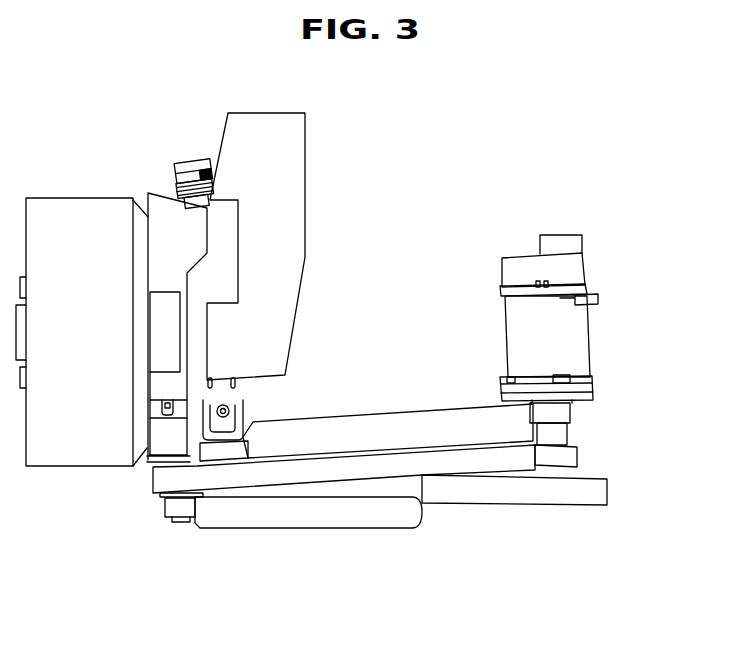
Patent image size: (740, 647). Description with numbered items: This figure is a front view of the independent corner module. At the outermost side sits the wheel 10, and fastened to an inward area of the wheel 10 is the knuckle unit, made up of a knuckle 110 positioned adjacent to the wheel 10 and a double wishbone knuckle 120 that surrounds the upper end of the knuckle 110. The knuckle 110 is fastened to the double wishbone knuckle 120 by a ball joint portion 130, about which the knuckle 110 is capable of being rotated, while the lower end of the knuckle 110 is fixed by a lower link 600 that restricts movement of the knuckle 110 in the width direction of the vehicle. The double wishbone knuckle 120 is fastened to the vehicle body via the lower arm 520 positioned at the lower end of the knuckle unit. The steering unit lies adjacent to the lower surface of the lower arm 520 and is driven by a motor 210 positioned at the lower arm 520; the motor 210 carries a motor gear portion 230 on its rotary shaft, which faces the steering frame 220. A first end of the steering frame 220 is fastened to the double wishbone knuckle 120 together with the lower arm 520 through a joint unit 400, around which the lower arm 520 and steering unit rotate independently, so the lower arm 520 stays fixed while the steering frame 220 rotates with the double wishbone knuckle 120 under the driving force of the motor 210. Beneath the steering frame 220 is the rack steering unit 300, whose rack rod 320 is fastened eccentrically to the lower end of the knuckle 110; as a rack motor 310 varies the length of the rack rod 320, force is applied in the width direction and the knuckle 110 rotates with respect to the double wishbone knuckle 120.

The wheel 10 is at (84, 443).
The knuckle 110 is at (165, 208).
The double wishbone knuckle 120 is at (293, 177).
The ball joint portion 130 is at (190, 170).
The motor 210 is at (577, 267).
The steering frame 220 is at (492, 457).
The motor gear portion 230 is at (578, 452).
The rack steering unit 300 is at (406, 537).
The rack motor 310 is at (567, 500).
The rack rod 320 is at (380, 497).
The joint unit 400 is at (228, 416).
The lower arm 520 is at (430, 412).
The lower link 600 is at (290, 516).